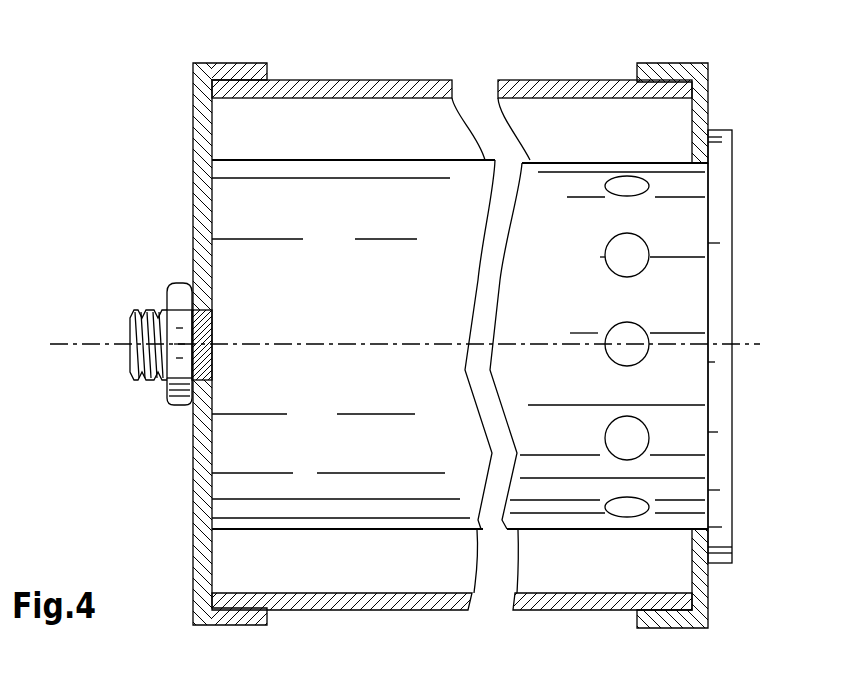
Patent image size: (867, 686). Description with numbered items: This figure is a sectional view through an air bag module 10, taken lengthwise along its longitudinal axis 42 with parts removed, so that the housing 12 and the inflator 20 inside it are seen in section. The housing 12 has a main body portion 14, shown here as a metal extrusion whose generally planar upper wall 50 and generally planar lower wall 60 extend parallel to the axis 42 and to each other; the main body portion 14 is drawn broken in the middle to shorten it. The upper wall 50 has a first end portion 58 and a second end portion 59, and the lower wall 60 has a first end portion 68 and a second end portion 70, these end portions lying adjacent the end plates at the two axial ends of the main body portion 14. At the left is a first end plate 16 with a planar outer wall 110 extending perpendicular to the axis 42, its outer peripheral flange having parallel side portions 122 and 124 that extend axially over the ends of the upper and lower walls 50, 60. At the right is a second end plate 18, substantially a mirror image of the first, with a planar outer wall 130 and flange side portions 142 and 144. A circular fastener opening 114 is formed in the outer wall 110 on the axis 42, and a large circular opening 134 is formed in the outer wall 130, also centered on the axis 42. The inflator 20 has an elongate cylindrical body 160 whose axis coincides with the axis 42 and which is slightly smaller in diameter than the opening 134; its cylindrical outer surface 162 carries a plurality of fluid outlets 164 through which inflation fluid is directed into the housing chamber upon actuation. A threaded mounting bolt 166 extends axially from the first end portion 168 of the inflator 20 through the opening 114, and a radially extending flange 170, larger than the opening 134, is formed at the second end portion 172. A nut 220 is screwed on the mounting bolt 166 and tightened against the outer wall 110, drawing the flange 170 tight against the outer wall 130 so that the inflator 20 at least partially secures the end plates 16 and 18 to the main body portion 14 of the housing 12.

The air bag module 10 is at (300, 32).
The housing 12 is at (367, 48).
The main body portion 14 is at (552, 68).
The first end plate 16 is at (180, 118).
The second end plate 18 is at (720, 75).
The inflator 20 is at (361, 150).
The axis 42 is at (418, 340).
The upper wall 50 is at (399, 72).
The first end portion of the upper wall 58 is at (228, 96).
The second end portion of the upper wall 59 is at (667, 85).
The lower wall 60 is at (416, 616).
The first end portion of the lower wall 68 is at (240, 600).
The second end portion of the lower wall 70 is at (653, 623).
The outer wall 110 is at (193, 553).
The fastener opening 114 is at (183, 330).
The side portion of the flange 122 is at (258, 70).
The side portion of the flange 124 is at (233, 625).
The outer wall 130 is at (715, 586).
The large circular opening 134 is at (703, 165).
The side portion of the flange 142 is at (683, 63).
The side portion of the flange 144 is at (672, 630).
The inflator body 160 is at (555, 197).
The cylindrical outer surface 162 is at (610, 163).
The fluid outlets 164 is at (605, 243).
The threaded mounting bolt 166 is at (133, 378).
The first end portion of the inflator 168 is at (241, 514).
The flange 170 is at (732, 235).
The second end portion of the inflator 172 is at (577, 505).
The nut 220 is at (182, 408).